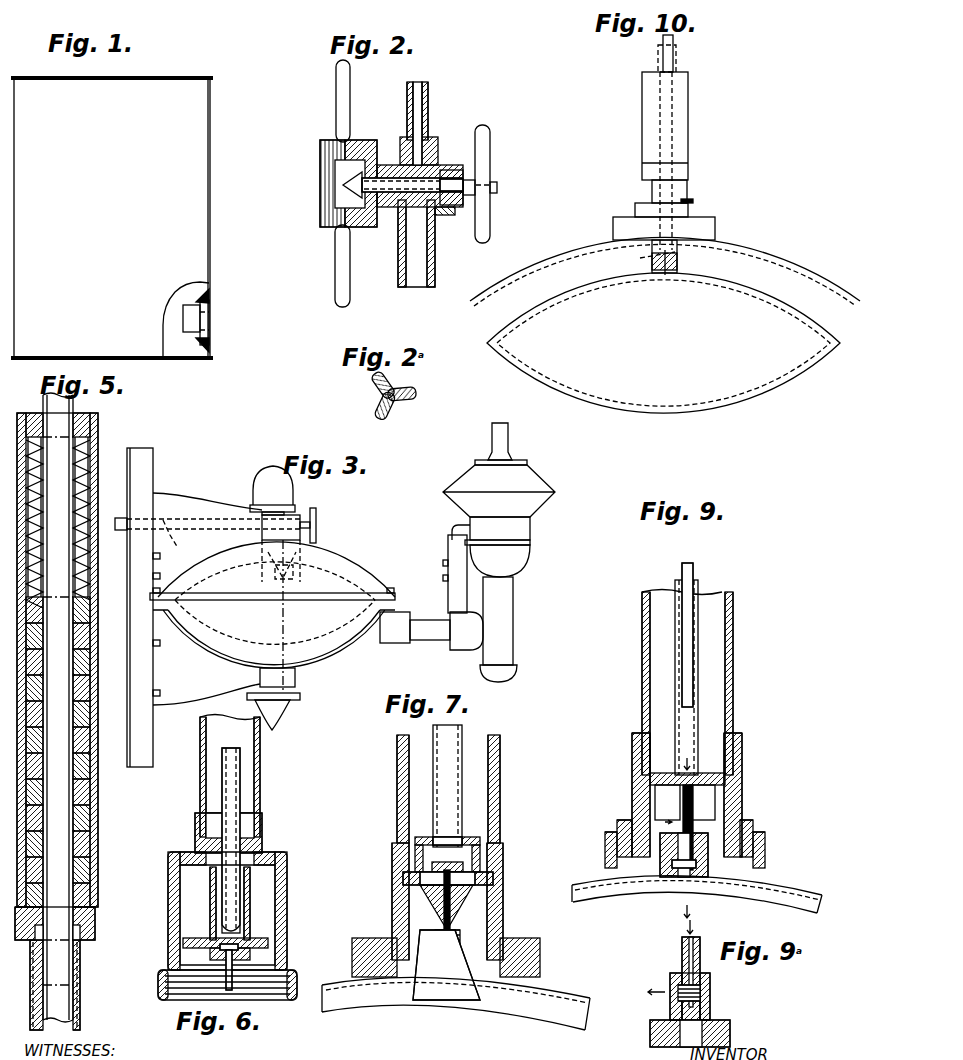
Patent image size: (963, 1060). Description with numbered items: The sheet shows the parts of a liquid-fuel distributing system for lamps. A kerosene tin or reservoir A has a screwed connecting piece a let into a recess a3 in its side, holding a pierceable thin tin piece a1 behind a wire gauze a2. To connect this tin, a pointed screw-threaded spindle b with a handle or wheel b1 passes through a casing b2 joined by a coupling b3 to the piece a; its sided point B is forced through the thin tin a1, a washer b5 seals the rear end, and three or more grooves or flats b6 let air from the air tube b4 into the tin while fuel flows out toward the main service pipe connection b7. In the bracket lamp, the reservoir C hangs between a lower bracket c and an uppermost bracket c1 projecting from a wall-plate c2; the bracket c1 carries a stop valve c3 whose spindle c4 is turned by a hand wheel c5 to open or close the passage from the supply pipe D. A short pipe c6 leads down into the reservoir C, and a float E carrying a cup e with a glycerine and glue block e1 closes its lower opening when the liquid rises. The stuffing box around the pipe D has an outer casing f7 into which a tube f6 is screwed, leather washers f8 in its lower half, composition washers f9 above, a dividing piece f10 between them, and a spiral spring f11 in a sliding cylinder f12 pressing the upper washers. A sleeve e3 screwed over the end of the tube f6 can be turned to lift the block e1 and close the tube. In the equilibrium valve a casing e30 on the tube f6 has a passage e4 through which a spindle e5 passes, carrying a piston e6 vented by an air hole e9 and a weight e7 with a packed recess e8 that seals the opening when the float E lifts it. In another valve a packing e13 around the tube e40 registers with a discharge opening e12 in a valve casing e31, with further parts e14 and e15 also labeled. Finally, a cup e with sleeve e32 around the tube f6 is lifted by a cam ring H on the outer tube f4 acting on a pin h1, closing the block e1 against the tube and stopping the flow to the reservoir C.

In FIG. 1, the kerosene tin or reservoir A is at (112, 218).
In FIG. 1, the screwed connecting piece a is at (206, 314).
In FIG. 1, the thin tin piece a1 is at (208, 332).
In FIG. 1, the wire gauze a2 is at (183, 310).
In FIG. 1, the recess a3 is at (208, 298).
In FIG. 2, the pointed end of spindle B is at (341, 185).
In FIG. 2, the screw-threaded spindle b is at (388, 205).
In FIG. 2, the handle or wheel b1 is at (486, 184).
In FIG. 2, the casing b2 is at (374, 178).
In FIG. 2, the coupling b3 is at (350, 140).
In FIG. 2, the air tube b4 is at (427, 106).
In FIG. 2, the washer b5 is at (455, 170).
In FIG. 2, the grooves or flats b6 is at (447, 215).
In FIG. 2a, the grooves or flats b6 is at (382, 396).
In FIG. 2, the connection to main service pipe b7 is at (435, 265).
In FIG. 10, the lamp reservoir C is at (768, 262).
In FIG. 3, the lamp reservoir C is at (291, 668).
In FIG. 9, the lamp reservoir C is at (796, 886).
In FIG. 3, the lower bracket c is at (354, 576).
In FIG. 3, the uppermost bracket c1 is at (212, 509).
In FIG. 3, the wall-plate c2 is at (155, 480).
In FIG. 3, the stop valve c3 is at (172, 540).
In FIG. 3, the valve spindle c4 is at (262, 522).
In FIG. 3, the thumbscrew or hand wheel c5 is at (318, 520).
In FIG. 3, the short pipe c6 is at (291, 560).
In FIG. 10, the supply pipe D is at (678, 103).
In FIG. 5, the supply pipe D is at (55, 760).
In FIG. 3, the supply pipe D is at (110, 528).
In FIG. 9, the supply pipe D is at (687, 625).
In FIG. 10, the float E is at (663, 343).
In FIG. 3, the float E is at (272, 593).
In FIG. 7, the float E is at (456, 1008).
In FIG. 9, the float E is at (644, 910).
In FIG. 10, the cup e is at (651, 264).
In FIG. 3, the cup e is at (268, 569).
In FIG. 10, the block of composition e1 is at (665, 275).
In FIG. 3, the block of composition e1 is at (274, 615).
In FIG. 6, the block of composition e1 is at (250, 956).
In FIG. 6, the sleeve e3 is at (250, 902).
In FIG. 9, the sleeve e3 is at (695, 836).
In FIG. 7, the passage e4 is at (435, 898).
In FIG. 9, the passage e4 is at (687, 795).
In FIG. 7, the spindle e5 is at (455, 900).
In FIG. 7, the piston e6 is at (444, 925).
In FIG. 7, the weight e7 is at (446, 965).
In FIG. 7, the packing recess e8 is at (460, 940).
In FIG. 7, the air hole e9 is at (493, 879).
In FIG. 9, the discharge opening e12 is at (680, 824).
In FIG. 9a, the discharge opening e12 is at (652, 1002).
In FIG. 9, the packing e13 is at (700, 812).
In FIG. 9, the block e14 is at (702, 802).
In FIG. 9a, the nut e15 is at (703, 993).
In FIG. 7, the valve casing e30 is at (480, 846).
In FIG. 9a, the valve casing e31 is at (710, 1004).
In FIG. 10, the sleeve e32 is at (678, 251).
In FIG. 9a, the tube e40 is at (682, 955).
In FIG. 10, the main sleeve or outer tube f4 is at (642, 162).
In FIG. 6, the main sleeve or outer tube f4 is at (262, 774).
In FIG. 10, the tube f6 is at (676, 162).
In FIG. 5, the tube f6 is at (80, 1000).
In FIG. 6, the tube f6 is at (240, 804).
In FIG. 7, the tube f6 is at (462, 782).
In FIG. 9, the tube f6 is at (690, 716).
In FIG. 5, the outer casing or tube f7 is at (90, 842).
In FIG. 5, the leather washers f8 is at (90, 870).
In FIG. 5, the composition washers f9 is at (90, 676).
In FIG. 5, the dividing piece f10 is at (90, 746).
In FIG. 5, the spiral spring f11 is at (90, 582).
In FIG. 5, the sliding cylinder f12 is at (92, 440).
In FIG. 10, the cam ring H is at (690, 213).
In FIG. 10, the pin h1 is at (690, 201).